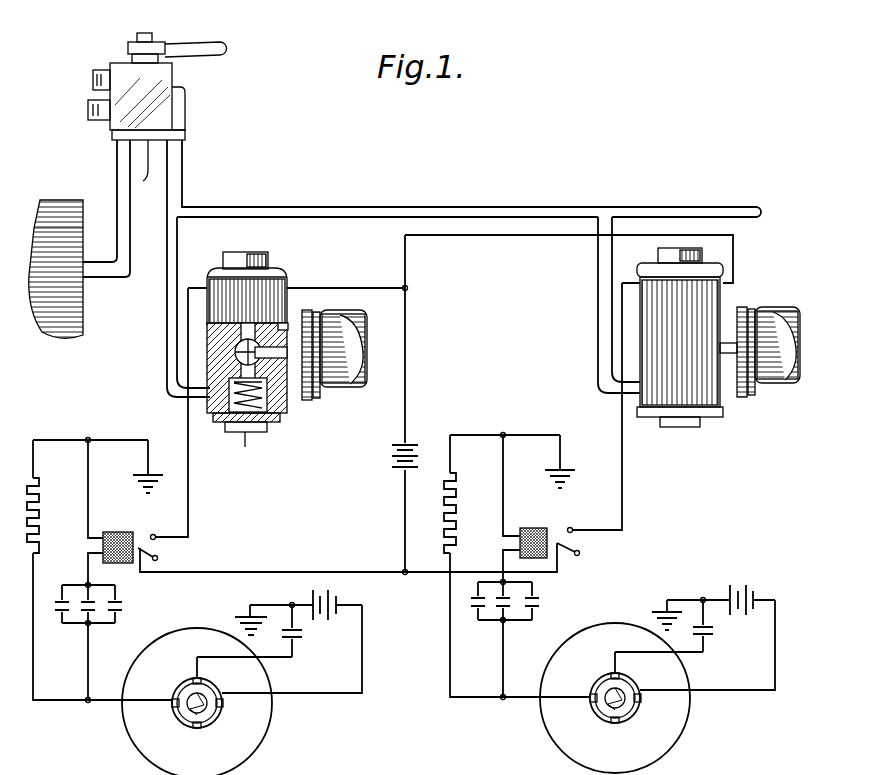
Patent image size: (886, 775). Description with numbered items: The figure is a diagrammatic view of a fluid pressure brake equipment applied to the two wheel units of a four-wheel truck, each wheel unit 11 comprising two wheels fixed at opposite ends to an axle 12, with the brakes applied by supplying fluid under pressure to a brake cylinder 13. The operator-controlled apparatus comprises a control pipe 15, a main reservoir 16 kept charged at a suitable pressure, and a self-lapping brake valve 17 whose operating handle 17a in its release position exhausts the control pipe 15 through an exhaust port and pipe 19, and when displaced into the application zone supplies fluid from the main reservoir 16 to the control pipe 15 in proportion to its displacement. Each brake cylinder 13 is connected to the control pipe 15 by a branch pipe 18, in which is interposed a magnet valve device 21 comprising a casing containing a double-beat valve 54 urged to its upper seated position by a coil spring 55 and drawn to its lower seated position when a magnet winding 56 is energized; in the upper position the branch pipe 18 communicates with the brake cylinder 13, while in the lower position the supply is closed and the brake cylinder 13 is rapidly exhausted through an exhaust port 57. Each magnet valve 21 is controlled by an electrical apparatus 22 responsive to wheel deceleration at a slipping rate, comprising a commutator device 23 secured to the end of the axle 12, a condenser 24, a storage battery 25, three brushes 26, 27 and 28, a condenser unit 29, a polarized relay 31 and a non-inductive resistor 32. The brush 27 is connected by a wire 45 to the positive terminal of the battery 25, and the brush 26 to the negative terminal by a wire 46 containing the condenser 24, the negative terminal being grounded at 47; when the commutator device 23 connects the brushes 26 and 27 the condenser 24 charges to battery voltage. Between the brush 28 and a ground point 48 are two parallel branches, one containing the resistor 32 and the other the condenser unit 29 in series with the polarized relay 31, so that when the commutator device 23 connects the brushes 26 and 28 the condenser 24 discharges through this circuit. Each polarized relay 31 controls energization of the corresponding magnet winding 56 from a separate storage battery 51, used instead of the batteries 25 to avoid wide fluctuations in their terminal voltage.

The wheel unit 11 is at (147, 667).
The axle 12 is at (213, 685).
The brake cylinder 13 is at (371, 297).
The control pipe 15 is at (415, 208).
The main reservoir 16 is at (51, 199).
The brake valve 17 is at (188, 112).
The operating handle 17a is at (227, 53).
The branch pipe 18 is at (178, 254).
The exhaust port and pipe 19 is at (146, 176).
The magnet valve device 21 is at (263, 236).
The electrical apparatus 22 is at (192, 648).
The commutator device 23 is at (216, 728).
The condenser 24 is at (299, 640).
The storage battery 25 is at (345, 601).
The brush 26 is at (194, 685).
The brush 27 is at (219, 709).
The brush 28 is at (178, 708).
The condenser unit 29 is at (80, 615).
The polarized relay 31 is at (114, 530).
The non-inductive resistor 32 is at (40, 505).
The wire 45 is at (362, 638).
The wire 46 is at (281, 659).
The ground 47 is at (249, 614).
The ground point 48 is at (148, 473).
The storage battery 51 is at (384, 458).
The double-beat valve 54 is at (284, 394).
The coil spring 55 is at (242, 453).
The magnet winding 56 is at (262, 287).
The exhaust port 57 is at (283, 326).